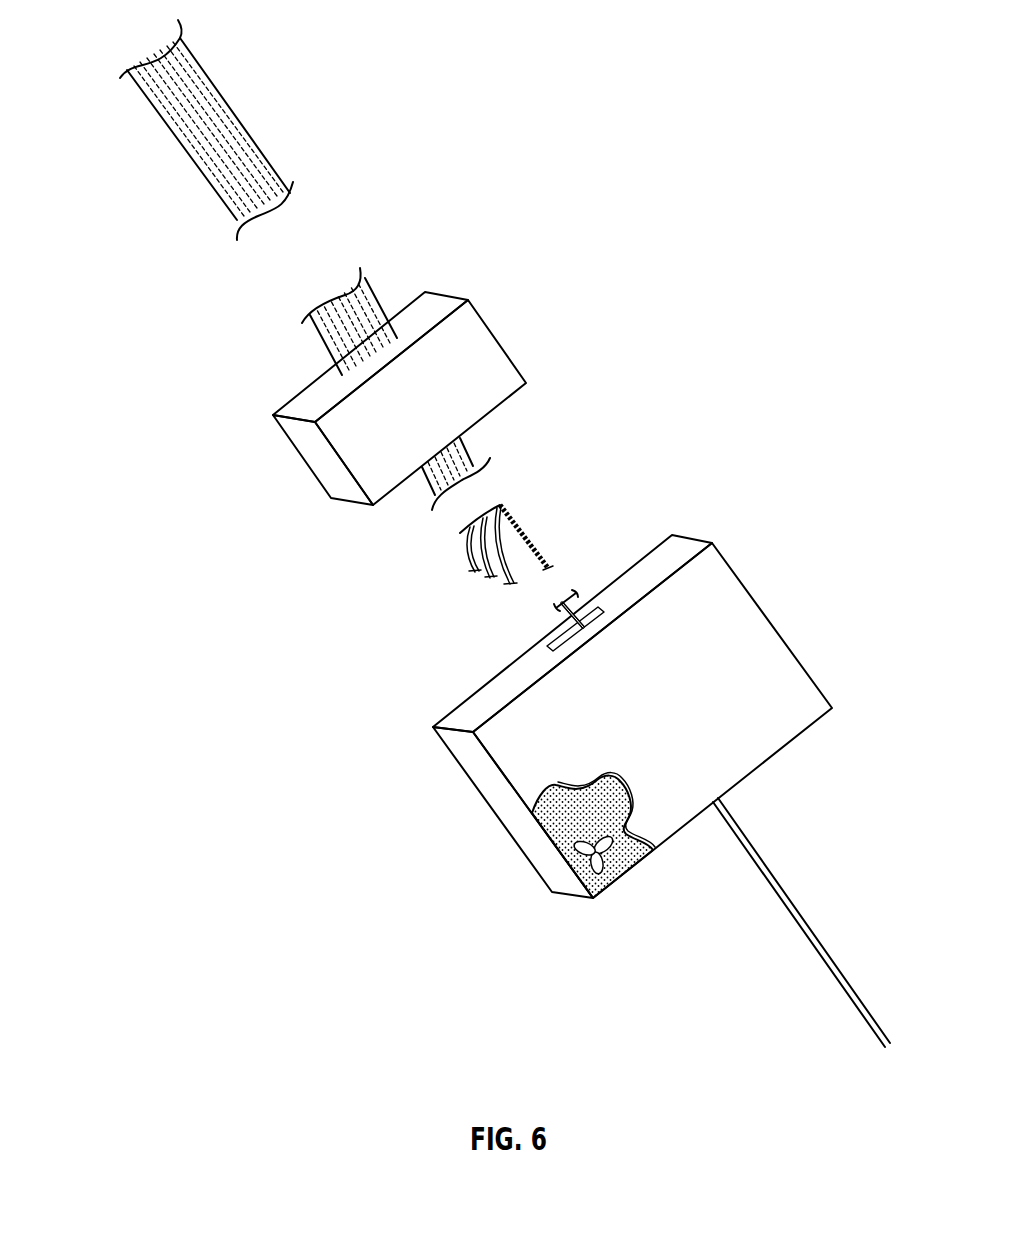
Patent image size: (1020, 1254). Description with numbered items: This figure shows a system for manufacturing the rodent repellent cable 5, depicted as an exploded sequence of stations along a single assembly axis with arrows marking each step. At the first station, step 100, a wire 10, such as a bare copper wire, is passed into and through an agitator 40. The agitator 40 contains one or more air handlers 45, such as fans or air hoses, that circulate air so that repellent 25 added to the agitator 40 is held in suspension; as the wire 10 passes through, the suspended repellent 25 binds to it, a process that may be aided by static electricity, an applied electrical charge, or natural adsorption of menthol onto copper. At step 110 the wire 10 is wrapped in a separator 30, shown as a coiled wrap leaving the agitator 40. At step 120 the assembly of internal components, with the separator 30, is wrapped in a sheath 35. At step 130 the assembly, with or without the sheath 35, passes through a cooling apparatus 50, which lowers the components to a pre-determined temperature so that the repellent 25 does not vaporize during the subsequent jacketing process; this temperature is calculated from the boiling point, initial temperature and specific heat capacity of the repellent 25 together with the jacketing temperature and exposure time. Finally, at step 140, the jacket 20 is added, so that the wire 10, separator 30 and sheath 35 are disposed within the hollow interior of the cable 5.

The cable 5 is at (132, 180).
The wire 10 is at (807, 937).
The jacket 20 is at (252, 138).
The repellent 25 is at (558, 608).
The separator 30 is at (517, 520).
The sheath 35 is at (428, 487).
The agitator 40 is at (748, 617).
The air handler 45 is at (580, 850).
The cooling apparatus 50 is at (308, 452).
The step 100 is at (860, 923).
The step 110 is at (577, 587).
The step 120 is at (525, 480).
The step 130 is at (528, 338).
The step 140 is at (310, 277).